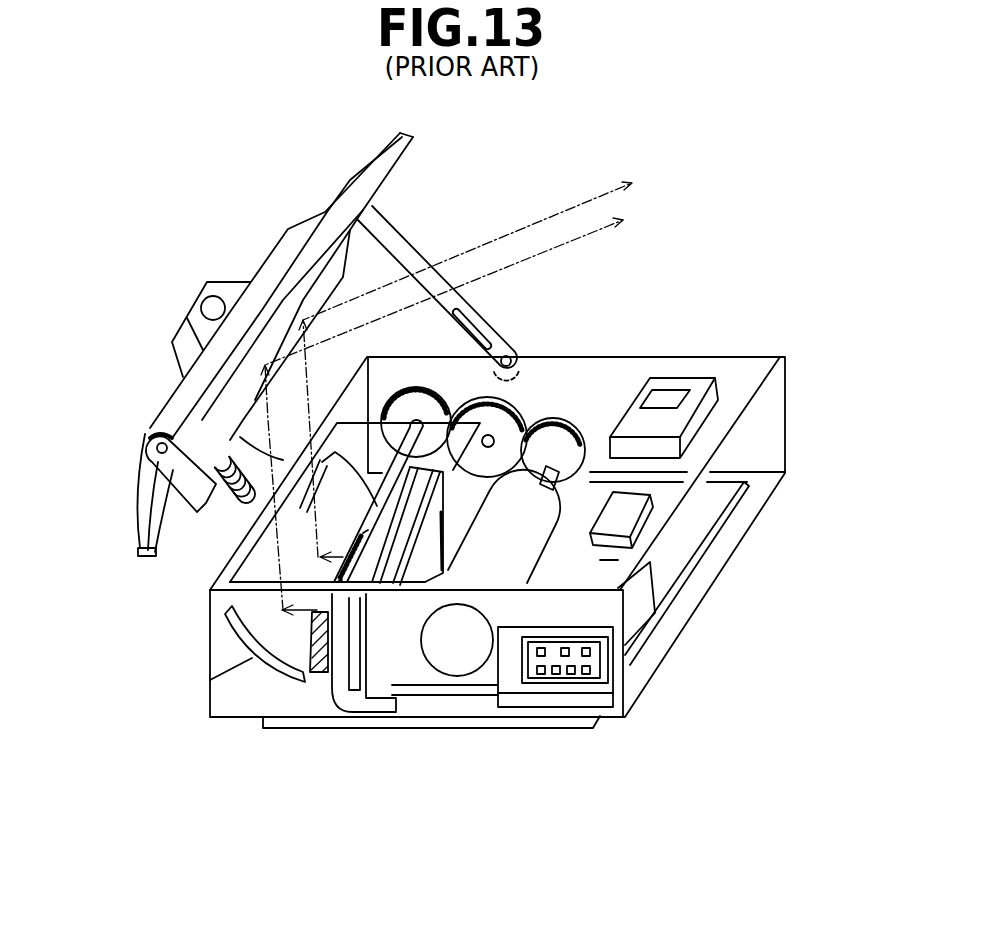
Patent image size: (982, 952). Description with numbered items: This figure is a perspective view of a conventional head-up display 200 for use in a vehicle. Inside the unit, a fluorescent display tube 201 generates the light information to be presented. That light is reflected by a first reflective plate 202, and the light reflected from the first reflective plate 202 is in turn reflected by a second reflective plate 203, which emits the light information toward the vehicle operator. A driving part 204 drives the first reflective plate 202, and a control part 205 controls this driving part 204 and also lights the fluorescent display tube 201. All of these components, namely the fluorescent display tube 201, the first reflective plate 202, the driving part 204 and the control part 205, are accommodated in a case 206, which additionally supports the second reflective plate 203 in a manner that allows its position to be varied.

The head-up display 200 is at (180, 82).
The fluorescent display tube 201 is at (312, 654).
The first reflective plate 202 is at (245, 640).
The second reflective plate 203 is at (140, 544).
The driving part 204 is at (562, 414).
The control part 205 is at (662, 508).
The case 206 is at (717, 577).